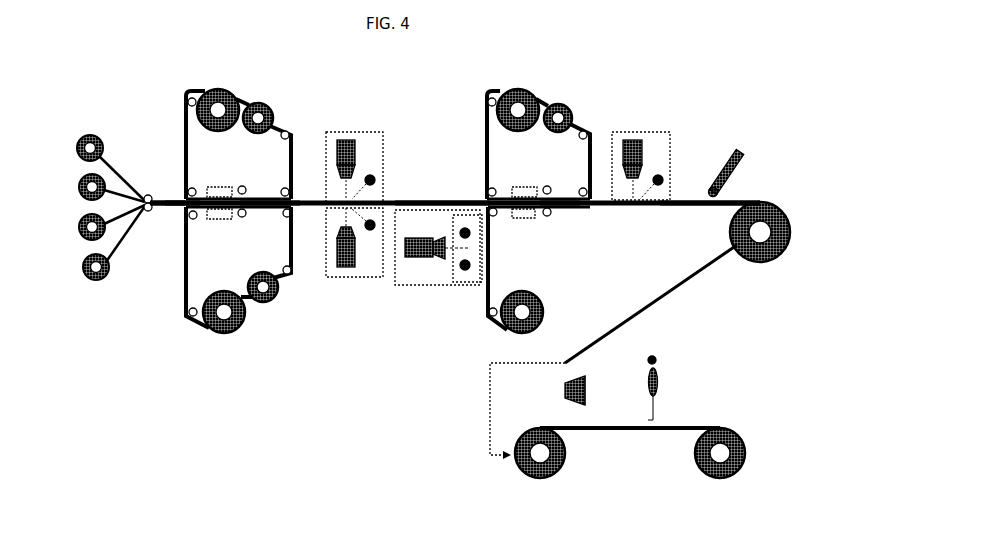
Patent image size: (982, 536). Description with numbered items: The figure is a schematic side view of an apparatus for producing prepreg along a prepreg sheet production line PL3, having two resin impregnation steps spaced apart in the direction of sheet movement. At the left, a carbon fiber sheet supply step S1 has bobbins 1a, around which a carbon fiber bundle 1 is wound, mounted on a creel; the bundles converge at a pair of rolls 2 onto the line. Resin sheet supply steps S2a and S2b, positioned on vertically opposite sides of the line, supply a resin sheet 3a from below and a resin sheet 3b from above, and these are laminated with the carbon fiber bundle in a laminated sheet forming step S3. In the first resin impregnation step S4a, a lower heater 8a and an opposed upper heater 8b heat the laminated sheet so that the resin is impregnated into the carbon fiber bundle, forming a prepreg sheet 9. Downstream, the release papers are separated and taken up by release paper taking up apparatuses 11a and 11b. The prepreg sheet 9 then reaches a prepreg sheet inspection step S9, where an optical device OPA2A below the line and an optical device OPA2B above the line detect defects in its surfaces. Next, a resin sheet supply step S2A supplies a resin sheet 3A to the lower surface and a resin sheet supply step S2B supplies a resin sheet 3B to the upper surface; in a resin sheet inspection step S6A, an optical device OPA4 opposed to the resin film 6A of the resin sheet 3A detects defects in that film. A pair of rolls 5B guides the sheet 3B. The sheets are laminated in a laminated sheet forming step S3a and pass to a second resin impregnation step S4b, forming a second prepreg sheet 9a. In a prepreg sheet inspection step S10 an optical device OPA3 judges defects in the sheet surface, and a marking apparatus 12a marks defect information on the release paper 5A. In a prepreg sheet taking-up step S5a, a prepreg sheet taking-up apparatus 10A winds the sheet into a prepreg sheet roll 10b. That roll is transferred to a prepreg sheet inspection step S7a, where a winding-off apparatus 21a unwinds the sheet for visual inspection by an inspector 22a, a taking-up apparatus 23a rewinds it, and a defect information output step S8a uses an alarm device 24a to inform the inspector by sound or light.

The carbon fiber bundle 1 is at (110, 252).
The bobbin 1a is at (96, 280).
The pinch rollers 2 is at (158, 218).
The resin sheet 3a is at (225, 333).
The resin sheet 3b is at (213, 90).
The resin sheet 3A is at (545, 313).
The resin sheet 3B is at (532, 92).
The release paper 5A is at (707, 208).
The roller 5B is at (577, 110).
The resin film 6A is at (490, 321).
The heater 8a is at (218, 221).
The heater 8b is at (217, 187).
The prepreg sheet 9 is at (293, 212).
The second prepreg sheet 9a is at (602, 208).
The prepreg sheet taking-up apparatus 10A is at (743, 253).
The prepreg sheet roll 10b is at (767, 207).
The release paper taking up apparatus 11a is at (262, 303).
The release paper taking up apparatus 11b is at (273, 89).
The marking apparatus 12a is at (738, 152).
The winding-off apparatus 21a is at (565, 448).
The inspector 22a is at (665, 375).
The taking-up apparatus 23a is at (697, 448).
The alarm device 24a is at (565, 388).
The carbon fiber sheet supply step S1 is at (163, 197).
The resin sheet supply step S2a is at (186, 320).
The resin sheet supply step S2b is at (198, 91).
The resin sheet supply step S2A is at (489, 233).
The resin sheet supply step S2B is at (503, 92).
The laminated sheet forming step S3 is at (180, 207).
The laminated sheet forming step S3a is at (477, 203).
The first resin impregnation step S4a is at (253, 209).
The second resin impregnation step S4b is at (563, 208).
The prepreg sheet taking-up step S5a is at (730, 233).
The resin sheet inspection step S6A is at (478, 252).
The prepreg sheet inspection step S7a is at (597, 428).
The defect information output step S8a is at (635, 365).
The prepreg sheet inspection step S9 is at (387, 311).
The prepreg sheet inspection step S10 is at (673, 200).
The prepreg sheet production line PL3 is at (425, 198).
The optical device OPA2A is at (352, 272).
The optical device OPA2B is at (342, 133).
The optical device OPA3 is at (655, 145).
The optical device OPA4 is at (407, 282).